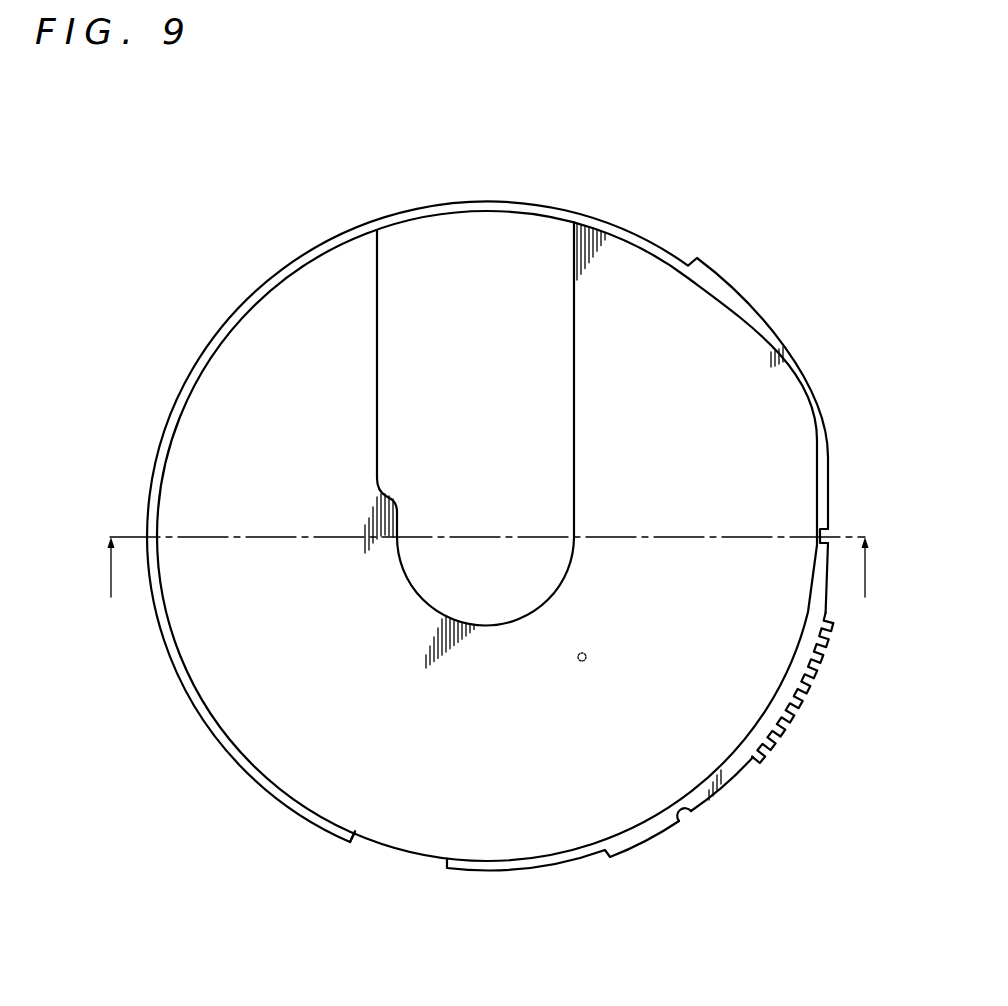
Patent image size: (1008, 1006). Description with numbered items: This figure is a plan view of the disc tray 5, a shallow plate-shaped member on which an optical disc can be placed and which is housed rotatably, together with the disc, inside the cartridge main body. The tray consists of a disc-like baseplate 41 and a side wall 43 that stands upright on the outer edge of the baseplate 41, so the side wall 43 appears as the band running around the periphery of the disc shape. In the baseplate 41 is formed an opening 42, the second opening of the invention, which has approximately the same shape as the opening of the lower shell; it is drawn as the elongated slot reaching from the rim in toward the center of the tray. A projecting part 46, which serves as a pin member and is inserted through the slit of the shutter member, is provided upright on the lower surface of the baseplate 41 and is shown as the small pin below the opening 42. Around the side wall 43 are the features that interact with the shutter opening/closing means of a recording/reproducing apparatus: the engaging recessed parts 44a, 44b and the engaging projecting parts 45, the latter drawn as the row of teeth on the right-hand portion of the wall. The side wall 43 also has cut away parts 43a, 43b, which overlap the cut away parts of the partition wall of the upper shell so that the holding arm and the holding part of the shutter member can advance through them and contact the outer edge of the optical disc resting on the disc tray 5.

The disc tray 5 is at (471, 110).
The baseplate 41 is at (637, 268).
The opening 42 is at (438, 272).
The side wall 43 is at (733, 312).
The cut away part 43a is at (560, 228).
The cut away part 43b is at (388, 860).
The engaging recessed part 44a is at (695, 816).
The engaging recessed part 44b is at (836, 530).
The engaging projecting part 45 is at (827, 615).
The projecting part 46 is at (587, 651).